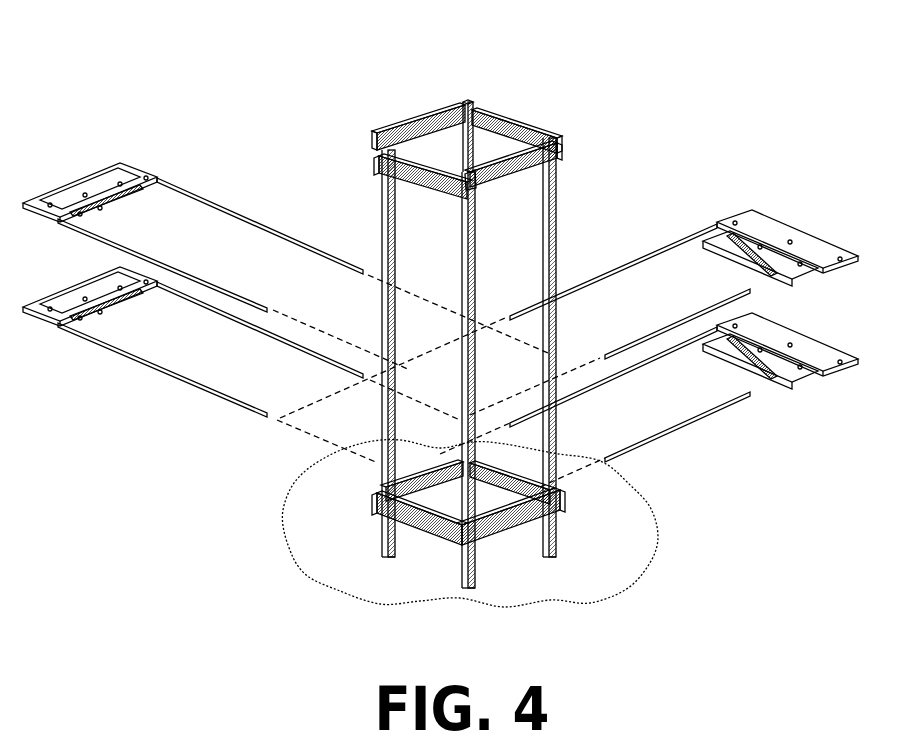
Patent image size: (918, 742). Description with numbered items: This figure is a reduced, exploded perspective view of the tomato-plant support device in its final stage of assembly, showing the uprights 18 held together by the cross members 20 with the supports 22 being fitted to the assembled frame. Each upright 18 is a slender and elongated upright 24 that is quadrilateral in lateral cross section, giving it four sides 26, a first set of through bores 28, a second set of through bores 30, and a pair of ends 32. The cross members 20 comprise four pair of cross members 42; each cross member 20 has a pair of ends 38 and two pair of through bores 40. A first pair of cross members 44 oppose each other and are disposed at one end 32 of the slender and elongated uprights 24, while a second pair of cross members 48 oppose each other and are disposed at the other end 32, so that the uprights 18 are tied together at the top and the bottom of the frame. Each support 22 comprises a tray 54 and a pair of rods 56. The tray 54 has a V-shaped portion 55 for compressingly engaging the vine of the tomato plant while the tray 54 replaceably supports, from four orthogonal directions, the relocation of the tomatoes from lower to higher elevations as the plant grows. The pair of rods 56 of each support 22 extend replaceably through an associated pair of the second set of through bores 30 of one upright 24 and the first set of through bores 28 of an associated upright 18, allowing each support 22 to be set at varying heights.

The upright 18 is at (467, 317).
The cross member 20 is at (400, 97).
The support 22 is at (70, 178).
The slender and elongated upright 24 is at (490, 317).
The side 26 is at (385, 302).
The first set of through bores 28 is at (394, 340).
The second set of through bores 30 is at (383, 348).
The end 32 is at (386, 360).
The end 38 is at (468, 216).
The through bore 40 is at (471, 108).
The four pair of cross members 42 is at (423, 103).
The first pair of cross members 44 is at (453, 103).
The second pair of cross members 48 is at (500, 523).
The tray 54 is at (777, 224).
The V-shaped portion 55 is at (775, 372).
The pair of rods 56 is at (619, 282).